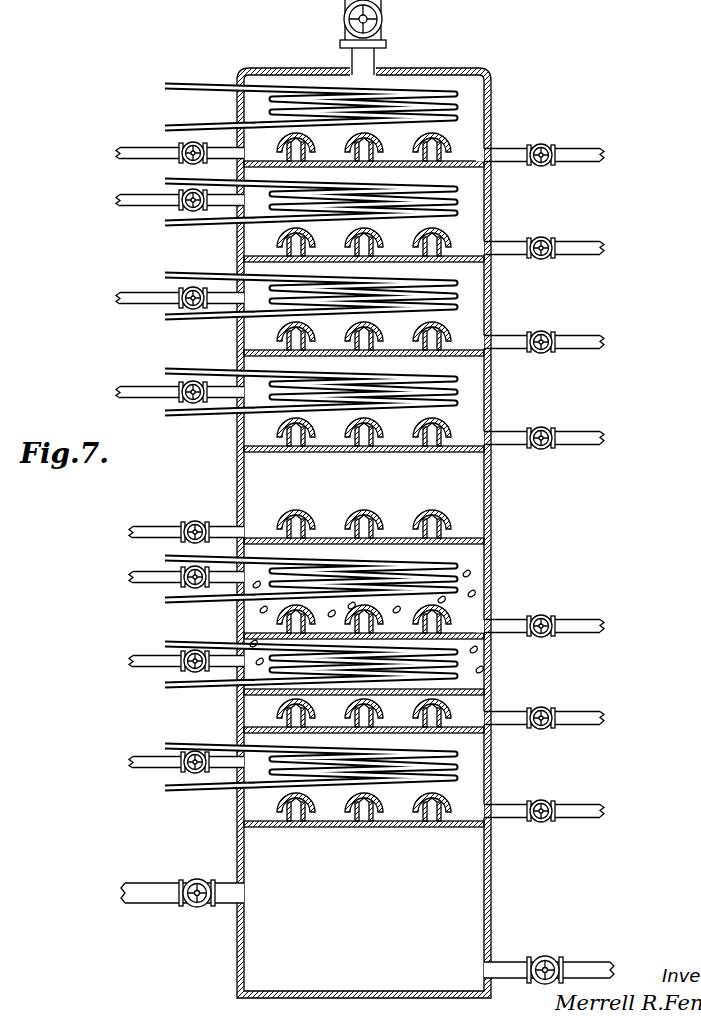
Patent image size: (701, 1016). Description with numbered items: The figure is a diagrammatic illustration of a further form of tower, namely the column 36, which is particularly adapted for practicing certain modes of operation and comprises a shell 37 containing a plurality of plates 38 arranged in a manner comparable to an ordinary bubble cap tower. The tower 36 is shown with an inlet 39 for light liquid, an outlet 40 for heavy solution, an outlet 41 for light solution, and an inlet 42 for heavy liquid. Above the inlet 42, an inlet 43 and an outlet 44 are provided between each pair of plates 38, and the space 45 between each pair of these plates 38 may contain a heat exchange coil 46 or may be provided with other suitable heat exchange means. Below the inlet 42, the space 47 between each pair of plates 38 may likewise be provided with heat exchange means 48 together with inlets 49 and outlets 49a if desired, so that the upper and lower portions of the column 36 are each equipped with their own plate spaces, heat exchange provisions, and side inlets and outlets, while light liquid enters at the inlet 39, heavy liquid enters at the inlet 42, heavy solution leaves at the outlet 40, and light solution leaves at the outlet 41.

The column 36 is at (506, 516).
The shell 37 is at (488, 573).
The plates 38 is at (486, 167).
The inlet for light liquid 39 is at (232, 903).
The outlet for heavy solution 40 is at (506, 962).
The outlet for light solution 41 is at (372, 52).
The inlet for heavy liquid 42 is at (218, 530).
The inlet 43 is at (216, 150).
The outlet 44 is at (497, 158).
The space 45 is at (470, 206).
The heat exchange coil 46 is at (190, 90).
The space 47 is at (476, 600).
The heat exchange means 48 is at (200, 601).
The inlets 49 is at (143, 572).
The outlets 49a is at (578, 627).